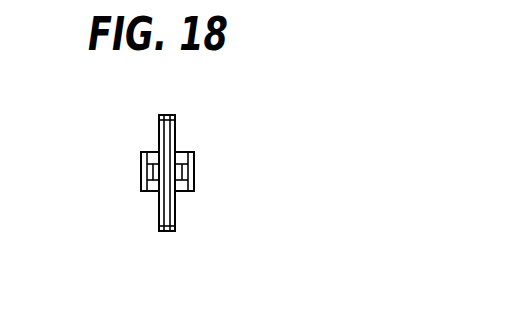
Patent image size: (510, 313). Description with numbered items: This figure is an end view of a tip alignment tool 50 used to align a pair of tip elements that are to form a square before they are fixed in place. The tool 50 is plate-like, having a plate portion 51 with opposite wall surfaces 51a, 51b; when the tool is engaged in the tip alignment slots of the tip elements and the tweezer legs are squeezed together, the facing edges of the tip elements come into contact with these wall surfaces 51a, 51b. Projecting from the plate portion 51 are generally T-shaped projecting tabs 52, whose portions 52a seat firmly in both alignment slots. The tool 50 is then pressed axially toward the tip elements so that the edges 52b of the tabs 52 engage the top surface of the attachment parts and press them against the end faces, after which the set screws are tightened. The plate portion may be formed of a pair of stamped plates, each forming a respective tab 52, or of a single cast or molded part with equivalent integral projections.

The tip alignment tool 50 is at (135, 219).
The plate portion 51 is at (166, 114).
The wall surface 51a is at (156, 220).
The wall surface 51b is at (176, 216).
The projecting tab 52 is at (155, 163).
The tab portion 52a is at (193, 173).
The tab edge 52b is at (155, 153).